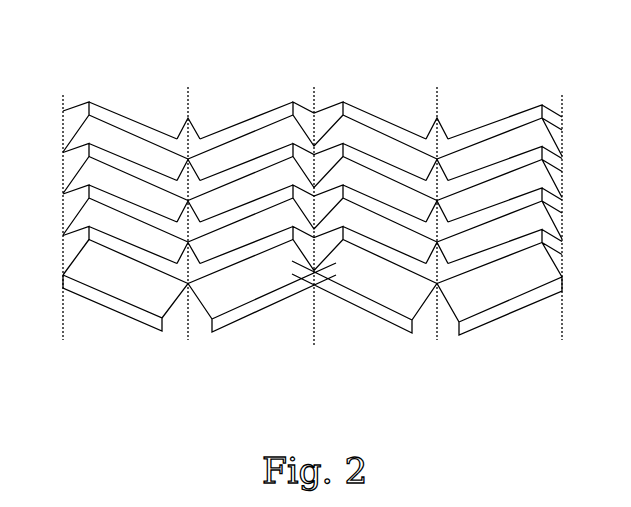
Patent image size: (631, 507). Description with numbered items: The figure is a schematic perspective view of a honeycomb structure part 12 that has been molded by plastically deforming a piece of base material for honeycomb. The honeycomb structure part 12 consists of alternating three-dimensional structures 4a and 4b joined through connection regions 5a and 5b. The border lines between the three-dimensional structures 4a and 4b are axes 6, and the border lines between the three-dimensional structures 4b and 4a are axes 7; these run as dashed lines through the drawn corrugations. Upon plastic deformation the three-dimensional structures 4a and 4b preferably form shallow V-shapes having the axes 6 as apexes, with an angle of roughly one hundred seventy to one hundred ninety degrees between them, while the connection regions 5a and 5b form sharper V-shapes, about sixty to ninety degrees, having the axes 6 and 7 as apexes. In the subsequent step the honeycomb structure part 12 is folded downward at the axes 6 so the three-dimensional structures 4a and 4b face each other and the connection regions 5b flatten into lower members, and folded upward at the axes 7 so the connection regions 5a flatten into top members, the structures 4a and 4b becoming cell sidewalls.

The three-dimensional structure 4a is at (126, 110).
The three-dimensional structure 4b is at (245, 110).
The connection region 5a is at (329, 108).
The connection region 5b is at (198, 314).
The axis 6 is at (188, 88).
The axis 7 is at (307, 322).
The honeycomb structure part 12 is at (312, 206).